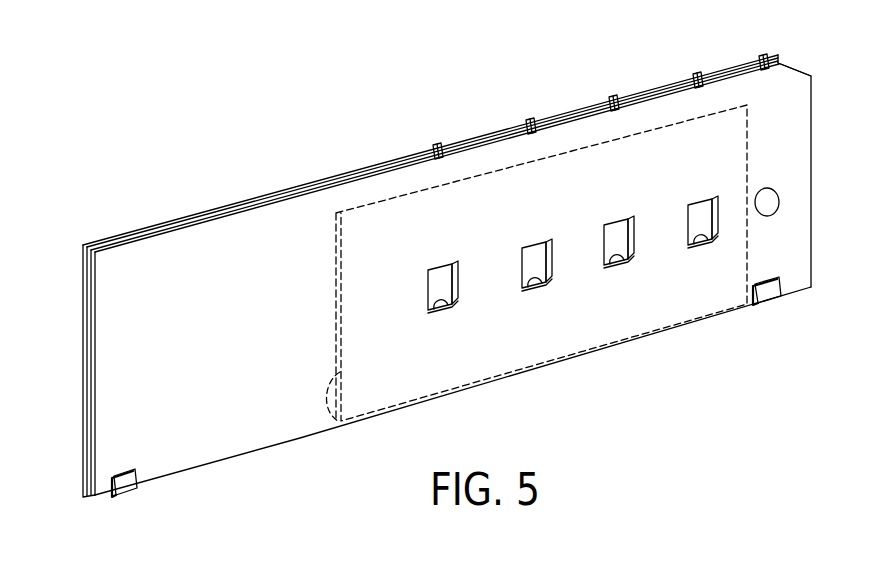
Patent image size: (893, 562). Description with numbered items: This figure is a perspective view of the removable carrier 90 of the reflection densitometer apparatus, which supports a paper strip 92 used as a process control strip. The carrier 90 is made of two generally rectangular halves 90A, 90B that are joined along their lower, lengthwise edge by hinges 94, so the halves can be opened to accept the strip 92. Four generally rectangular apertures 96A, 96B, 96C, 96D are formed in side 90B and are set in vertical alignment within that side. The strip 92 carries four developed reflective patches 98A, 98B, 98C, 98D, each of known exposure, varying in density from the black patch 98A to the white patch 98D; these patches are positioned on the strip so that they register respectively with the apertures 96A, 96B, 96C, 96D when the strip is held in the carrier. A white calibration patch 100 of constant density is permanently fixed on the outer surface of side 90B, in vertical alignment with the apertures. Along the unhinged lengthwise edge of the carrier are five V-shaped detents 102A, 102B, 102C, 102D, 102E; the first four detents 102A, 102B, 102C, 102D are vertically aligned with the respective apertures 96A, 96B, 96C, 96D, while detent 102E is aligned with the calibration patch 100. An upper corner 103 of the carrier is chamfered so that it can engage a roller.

The removable carrier 90 is at (163, 218).
The carrier half 90A is at (87, 265).
The carrier half 90B is at (277, 388).
The paper strip 92 is at (341, 425).
The hinges 94 is at (133, 479).
The rectangular aperture 96A is at (441, 305).
The rectangular aperture 96B is at (534, 284).
The rectangular aperture 96C is at (617, 262).
The rectangular aperture 96D is at (698, 241).
The reflective patch 98A is at (435, 282).
The reflective patch 98B is at (530, 256).
The reflective patch 98C is at (612, 234).
The reflective patch 98D is at (700, 212).
The white calibration patch 100 is at (764, 197).
The V-shaped detent 102A is at (437, 149).
The V-shaped detent 102B is at (530, 125).
The V-shaped detent 102C is at (613, 101).
The V-shaped detent 102D is at (697, 78).
The V-shaped detent 102E is at (763, 58).
The upper corner 103 is at (792, 64).